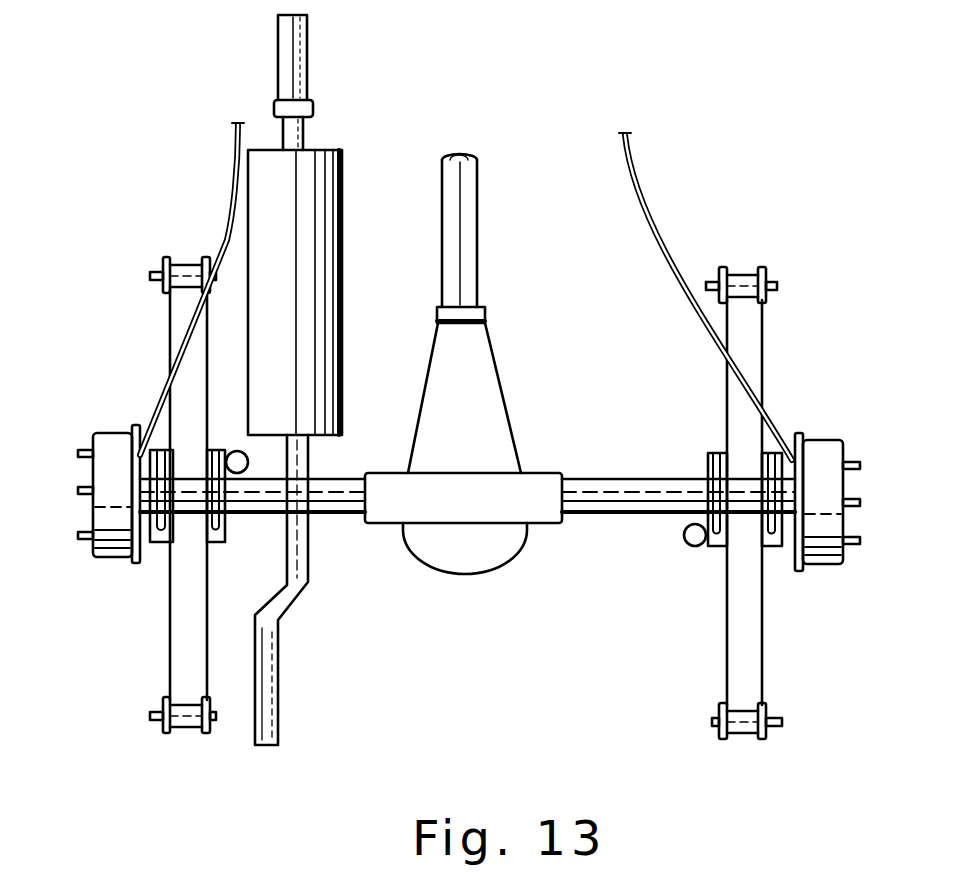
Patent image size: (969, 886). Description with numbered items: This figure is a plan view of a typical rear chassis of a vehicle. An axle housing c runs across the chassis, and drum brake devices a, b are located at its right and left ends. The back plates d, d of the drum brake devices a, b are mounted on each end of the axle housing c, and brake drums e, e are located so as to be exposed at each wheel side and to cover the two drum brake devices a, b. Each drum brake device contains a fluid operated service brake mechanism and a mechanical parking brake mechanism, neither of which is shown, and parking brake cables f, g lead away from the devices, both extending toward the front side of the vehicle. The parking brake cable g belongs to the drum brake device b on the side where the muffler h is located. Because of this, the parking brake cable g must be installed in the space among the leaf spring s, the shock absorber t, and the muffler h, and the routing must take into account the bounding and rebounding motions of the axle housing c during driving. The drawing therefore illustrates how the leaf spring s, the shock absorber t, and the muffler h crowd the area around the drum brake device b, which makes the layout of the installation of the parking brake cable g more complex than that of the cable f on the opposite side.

The drum brake device a is at (808, 416).
The drum brake device b is at (115, 406).
The axle housing c is at (322, 518).
The back plate d is at (137, 565).
The brake drum e is at (95, 514).
The parking brake cable f is at (645, 202).
The parking brake cable g is at (233, 184).
The muffler h is at (343, 168).
The leaf spring s is at (178, 668).
The shock absorber t is at (237, 450).